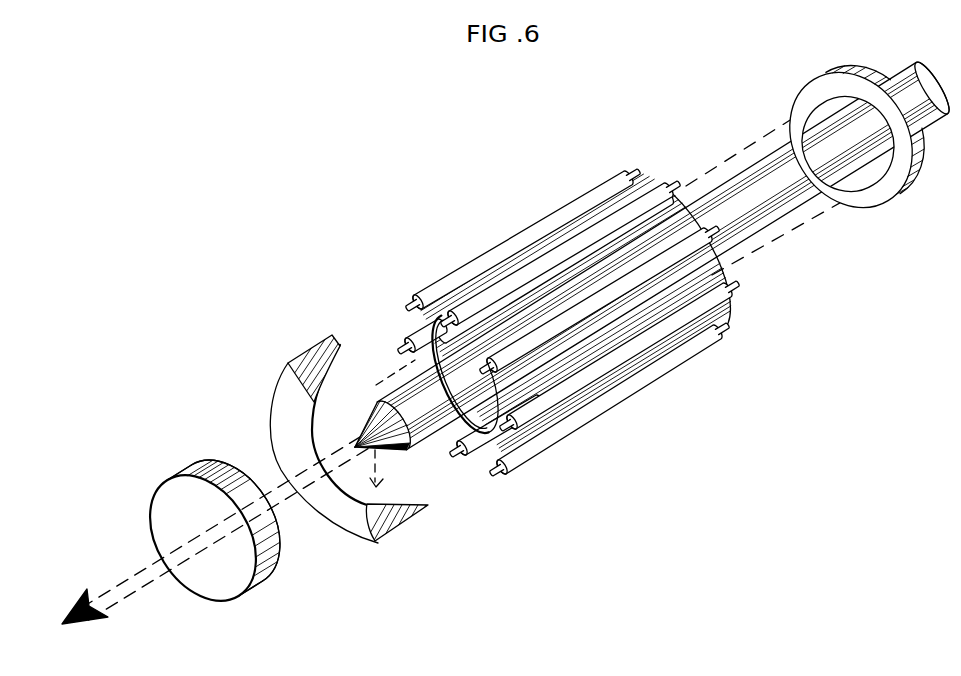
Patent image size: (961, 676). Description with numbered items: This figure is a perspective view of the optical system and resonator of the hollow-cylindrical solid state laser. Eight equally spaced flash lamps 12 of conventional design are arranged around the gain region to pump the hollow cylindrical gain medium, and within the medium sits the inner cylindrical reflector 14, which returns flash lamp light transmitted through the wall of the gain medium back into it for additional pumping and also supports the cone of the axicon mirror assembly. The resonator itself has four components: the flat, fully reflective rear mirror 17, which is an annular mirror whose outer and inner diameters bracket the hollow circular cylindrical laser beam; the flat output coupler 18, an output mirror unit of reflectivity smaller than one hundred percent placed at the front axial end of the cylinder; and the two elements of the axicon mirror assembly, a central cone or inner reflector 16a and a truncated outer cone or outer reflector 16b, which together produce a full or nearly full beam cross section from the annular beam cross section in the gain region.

The flash lamps 12 is at (594, 186).
The inner cylindrical reflector 14 is at (376, 385).
The central cone (inner reflector) 16a is at (420, 452).
The truncated outer cone (outer reflector) 16b is at (283, 397).
The rear mirror 17 is at (849, 80).
The output coupler 18 is at (194, 476).